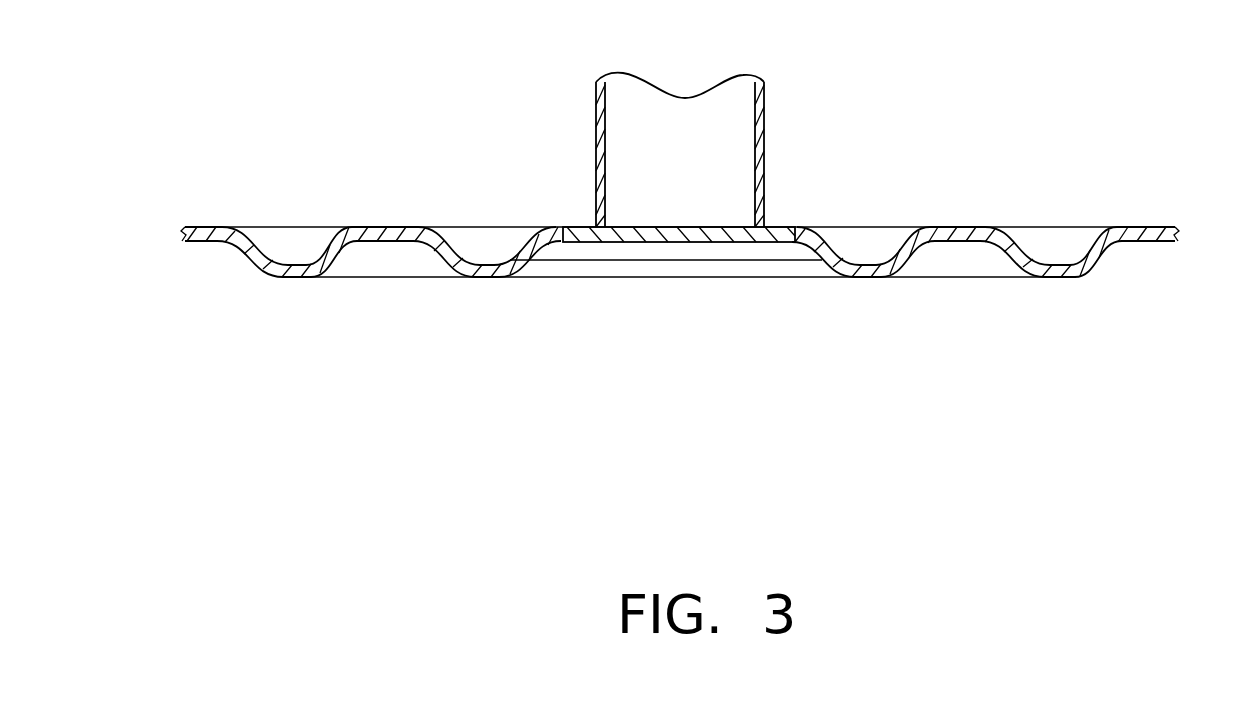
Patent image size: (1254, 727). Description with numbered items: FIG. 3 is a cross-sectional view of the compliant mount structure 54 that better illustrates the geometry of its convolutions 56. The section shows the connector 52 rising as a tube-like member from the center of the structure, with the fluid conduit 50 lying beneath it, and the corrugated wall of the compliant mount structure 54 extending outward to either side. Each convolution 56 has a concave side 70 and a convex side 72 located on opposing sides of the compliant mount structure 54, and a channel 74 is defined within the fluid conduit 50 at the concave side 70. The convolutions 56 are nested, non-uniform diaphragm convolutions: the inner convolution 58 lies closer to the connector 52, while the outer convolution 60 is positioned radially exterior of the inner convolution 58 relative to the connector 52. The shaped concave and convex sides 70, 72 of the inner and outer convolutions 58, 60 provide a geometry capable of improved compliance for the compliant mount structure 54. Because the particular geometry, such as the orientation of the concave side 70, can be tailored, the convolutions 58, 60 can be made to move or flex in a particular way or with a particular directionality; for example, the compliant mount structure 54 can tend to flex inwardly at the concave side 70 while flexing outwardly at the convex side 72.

The fluid conduit 50 is at (777, 229).
The connector 52 is at (764, 113).
The compliant mount structure 54 is at (338, 59).
The convolutions 56 is at (249, 263).
The inner convolution 58 is at (481, 274).
The outer convolution 60 is at (302, 278).
The concave side 70 is at (296, 262).
The convex side 72 is at (292, 278).
The channel 74 is at (263, 227).